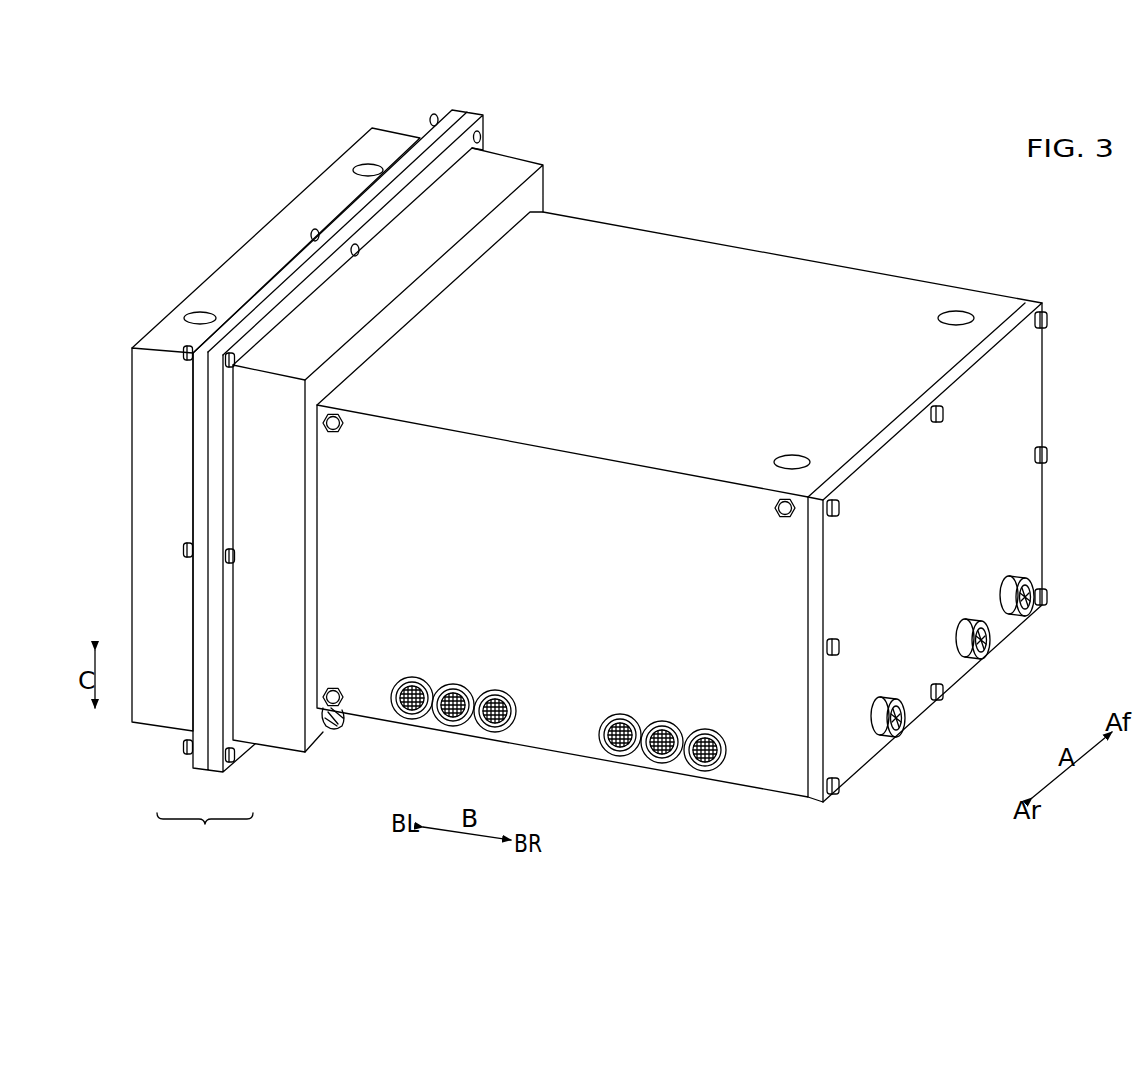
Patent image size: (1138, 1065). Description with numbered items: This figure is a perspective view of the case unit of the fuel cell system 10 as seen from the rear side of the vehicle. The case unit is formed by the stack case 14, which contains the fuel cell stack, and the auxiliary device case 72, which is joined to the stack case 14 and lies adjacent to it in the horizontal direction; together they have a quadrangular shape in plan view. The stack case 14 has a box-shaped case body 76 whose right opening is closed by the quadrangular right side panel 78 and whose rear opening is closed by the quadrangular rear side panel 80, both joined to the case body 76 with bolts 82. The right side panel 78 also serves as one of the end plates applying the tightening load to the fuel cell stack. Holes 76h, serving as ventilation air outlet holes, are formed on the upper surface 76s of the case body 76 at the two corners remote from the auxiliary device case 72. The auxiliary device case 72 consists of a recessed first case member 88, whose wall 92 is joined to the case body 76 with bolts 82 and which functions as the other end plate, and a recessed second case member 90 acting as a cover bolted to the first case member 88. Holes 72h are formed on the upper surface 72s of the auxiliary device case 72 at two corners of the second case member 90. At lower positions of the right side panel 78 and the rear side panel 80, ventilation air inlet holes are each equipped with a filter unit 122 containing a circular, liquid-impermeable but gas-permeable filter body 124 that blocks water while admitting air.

The fuel cell system 10 is at (984, 185).
The stack case 14 is at (892, 252).
The auxiliary device case 72 is at (205, 833).
The holes 72h is at (367, 168).
The upper surface 72s is at (252, 258).
The case body 76 is at (799, 277).
The holes 76h is at (942, 315).
The upper surface 76s is at (700, 261).
The right side panel 78 is at (933, 717).
The rear side panel 80 is at (577, 705).
The bolts 82 is at (1047, 318).
The first case member 88 is at (268, 750).
The second case member 90 is at (160, 730).
The wall 92 is at (430, 285).
The filter unit 122 is at (486, 730).
The filter body 124 is at (495, 700).